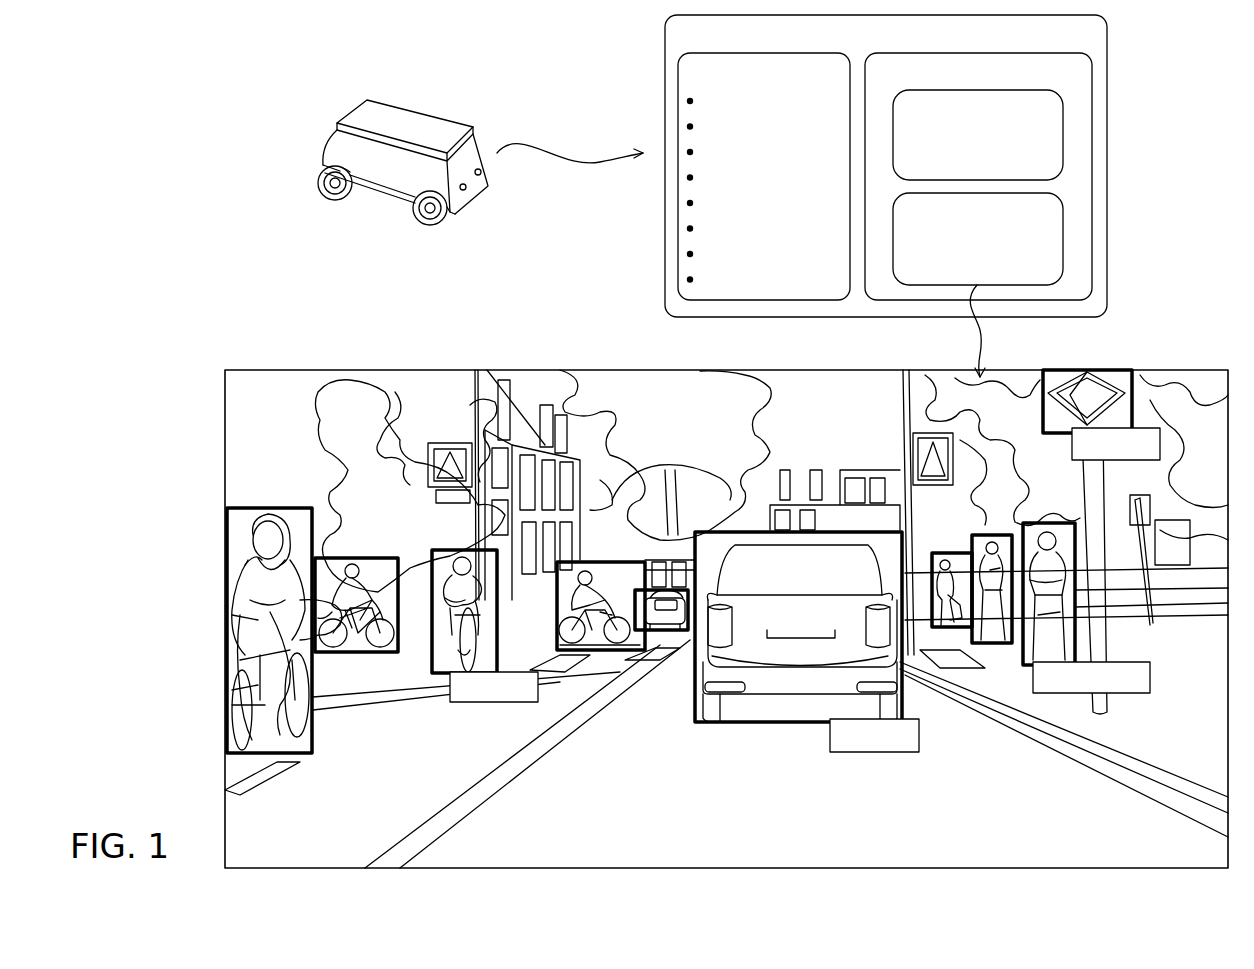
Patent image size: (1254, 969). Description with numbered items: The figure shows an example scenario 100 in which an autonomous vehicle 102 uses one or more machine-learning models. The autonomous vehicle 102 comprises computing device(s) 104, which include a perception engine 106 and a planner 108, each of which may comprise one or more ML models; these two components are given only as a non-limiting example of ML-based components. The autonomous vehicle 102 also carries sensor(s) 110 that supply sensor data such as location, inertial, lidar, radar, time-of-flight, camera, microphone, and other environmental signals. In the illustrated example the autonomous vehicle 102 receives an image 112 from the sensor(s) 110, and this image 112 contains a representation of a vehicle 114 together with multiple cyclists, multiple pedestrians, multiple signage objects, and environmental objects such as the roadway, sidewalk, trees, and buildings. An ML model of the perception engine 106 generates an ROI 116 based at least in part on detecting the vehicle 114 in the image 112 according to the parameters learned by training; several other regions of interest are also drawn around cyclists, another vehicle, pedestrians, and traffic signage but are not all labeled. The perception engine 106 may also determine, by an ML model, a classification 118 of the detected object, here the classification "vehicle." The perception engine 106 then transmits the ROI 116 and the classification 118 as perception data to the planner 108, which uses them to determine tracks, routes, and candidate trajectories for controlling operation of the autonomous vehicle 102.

The example scenario 100 is at (170, 70).
The autonomous vehicle 102 is at (386, 119).
The computing device(s) 104 is at (978, 176).
The perception engine 106 is at (978, 239).
The planner 108 is at (978, 135).
The sensor(s) 110 is at (764, 176).
The image 112 is at (383, 368).
The vehicle 114 is at (800, 633).
The ROI 116 is at (782, 724).
The classification 118 is at (874, 752).